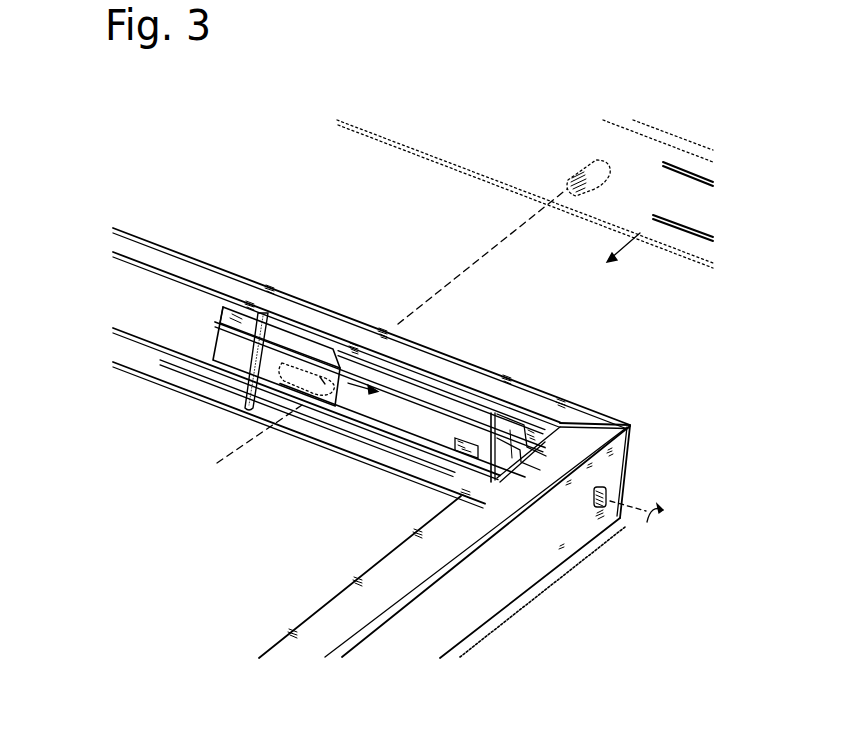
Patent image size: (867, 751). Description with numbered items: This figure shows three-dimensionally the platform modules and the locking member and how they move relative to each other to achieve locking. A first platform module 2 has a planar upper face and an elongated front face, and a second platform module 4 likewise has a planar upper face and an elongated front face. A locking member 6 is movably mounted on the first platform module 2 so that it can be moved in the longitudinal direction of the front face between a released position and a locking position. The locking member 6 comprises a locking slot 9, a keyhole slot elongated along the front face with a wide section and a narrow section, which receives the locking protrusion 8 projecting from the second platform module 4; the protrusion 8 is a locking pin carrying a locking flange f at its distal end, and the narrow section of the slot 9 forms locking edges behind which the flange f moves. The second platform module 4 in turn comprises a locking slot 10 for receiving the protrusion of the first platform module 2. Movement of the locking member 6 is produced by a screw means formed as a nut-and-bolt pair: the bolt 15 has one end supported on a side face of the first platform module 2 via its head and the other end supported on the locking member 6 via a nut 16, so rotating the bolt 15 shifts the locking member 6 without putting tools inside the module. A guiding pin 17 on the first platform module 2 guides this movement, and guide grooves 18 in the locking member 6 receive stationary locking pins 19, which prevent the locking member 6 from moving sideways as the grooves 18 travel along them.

The first platform module 2 is at (550, 587).
The second platform module 4 is at (390, 140).
The locking member 6 is at (247, 307).
The locking protrusion 8 is at (582, 160).
The locking slot 9 is at (300, 364).
The locking slot 10 is at (685, 232).
The screw member 15 is at (464, 438).
The nut 16 is at (492, 413).
The guiding pin 17 is at (246, 397).
The guide grooves 18 is at (354, 346).
The locking pins 19 is at (385, 328).
The locking flange f is at (568, 186).